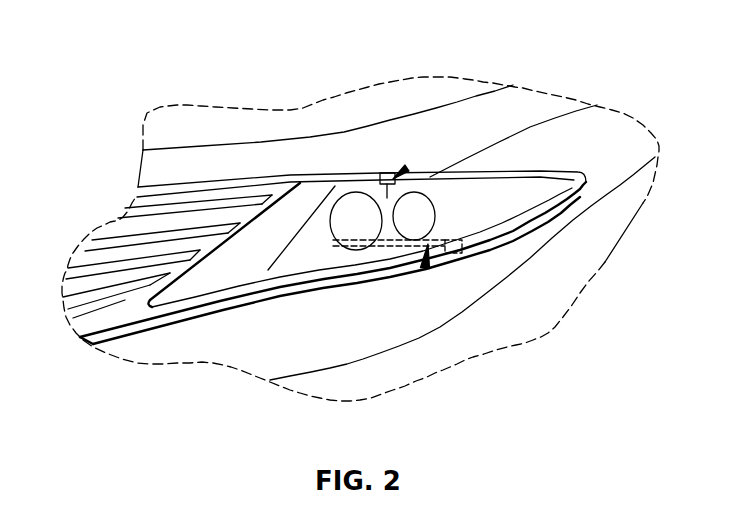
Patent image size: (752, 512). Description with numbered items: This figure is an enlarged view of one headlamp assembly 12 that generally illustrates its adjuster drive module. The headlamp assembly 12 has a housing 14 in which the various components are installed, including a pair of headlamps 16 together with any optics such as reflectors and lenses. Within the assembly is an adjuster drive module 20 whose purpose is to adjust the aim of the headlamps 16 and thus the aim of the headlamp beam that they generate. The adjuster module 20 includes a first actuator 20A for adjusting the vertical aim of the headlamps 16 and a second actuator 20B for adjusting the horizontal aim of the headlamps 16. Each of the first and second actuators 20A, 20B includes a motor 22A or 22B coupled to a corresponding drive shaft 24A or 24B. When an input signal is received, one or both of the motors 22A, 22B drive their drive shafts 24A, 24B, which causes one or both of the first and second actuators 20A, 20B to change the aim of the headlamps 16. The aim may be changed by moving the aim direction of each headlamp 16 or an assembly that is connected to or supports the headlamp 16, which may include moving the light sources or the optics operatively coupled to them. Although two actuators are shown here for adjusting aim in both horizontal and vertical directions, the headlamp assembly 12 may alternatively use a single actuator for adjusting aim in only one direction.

The headlamp assembly 12 is at (360, 231).
The housing 14 is at (324, 199).
The headlamps 16 is at (505, 157).
The adjuster drive module 20 is at (362, 300).
The first actuator 20A is at (438, 106).
The second actuator 20B is at (461, 329).
The motor 22A is at (404, 112).
The motor 22B is at (507, 324).
The drive shaft 24A is at (478, 106).
The drive shaft 24B is at (406, 349).